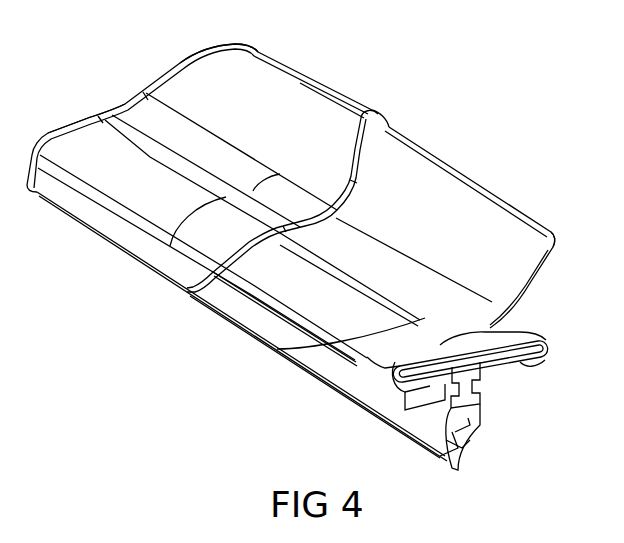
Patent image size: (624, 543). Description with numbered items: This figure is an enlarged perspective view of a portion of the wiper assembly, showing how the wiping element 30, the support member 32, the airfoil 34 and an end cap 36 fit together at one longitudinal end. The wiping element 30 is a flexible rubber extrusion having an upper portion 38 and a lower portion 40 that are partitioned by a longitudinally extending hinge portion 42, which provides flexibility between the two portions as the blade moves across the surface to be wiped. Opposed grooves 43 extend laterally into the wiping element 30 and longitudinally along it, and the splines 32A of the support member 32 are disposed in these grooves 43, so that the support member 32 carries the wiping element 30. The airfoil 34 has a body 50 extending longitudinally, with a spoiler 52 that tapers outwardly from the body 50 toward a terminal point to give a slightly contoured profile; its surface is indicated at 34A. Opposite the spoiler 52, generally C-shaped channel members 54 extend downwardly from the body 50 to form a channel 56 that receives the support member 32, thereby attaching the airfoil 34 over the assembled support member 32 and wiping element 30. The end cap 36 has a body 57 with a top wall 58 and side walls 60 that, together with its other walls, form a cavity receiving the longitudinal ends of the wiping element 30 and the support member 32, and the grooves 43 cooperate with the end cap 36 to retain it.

The wiping element 30 is at (480, 415).
The support member 32 is at (525, 340).
The splines 32A is at (307, 372).
The airfoil 34 is at (330, 224).
The panel surface 34A is at (425, 157).
The end caps 36 is at (322, 78).
The upper portion 38 is at (490, 377).
The lower portion 40 is at (464, 438).
The hinge portion 42 is at (455, 450).
The grooves 43 is at (459, 417).
The body 50 is at (277, 350).
The spoiler 52 is at (543, 265).
The channel members 54 is at (422, 390).
The channel 56 is at (392, 382).
The body 57 is at (180, 60).
The top wall 58 is at (108, 124).
The side walls 60 is at (95, 215).